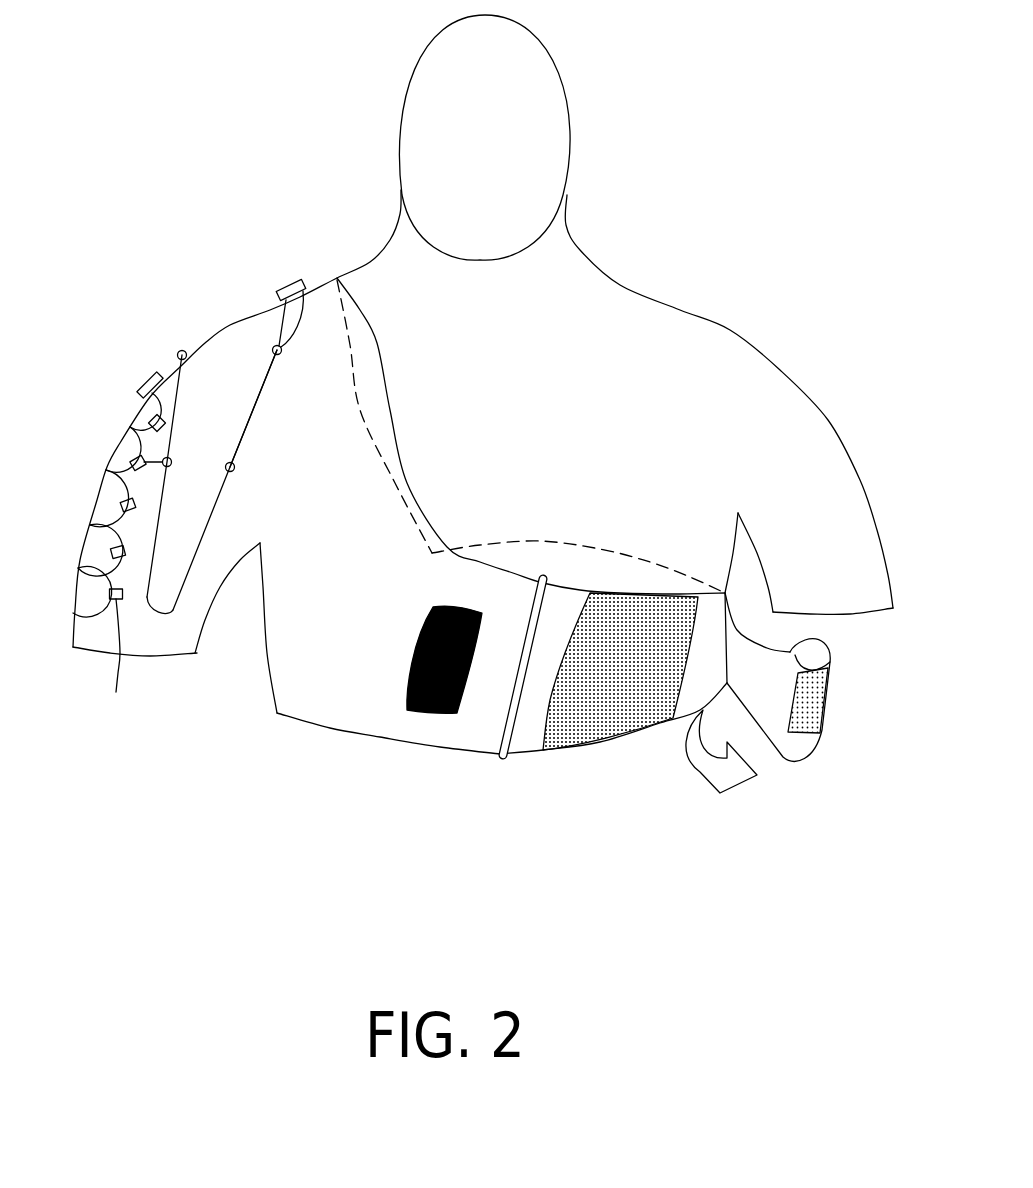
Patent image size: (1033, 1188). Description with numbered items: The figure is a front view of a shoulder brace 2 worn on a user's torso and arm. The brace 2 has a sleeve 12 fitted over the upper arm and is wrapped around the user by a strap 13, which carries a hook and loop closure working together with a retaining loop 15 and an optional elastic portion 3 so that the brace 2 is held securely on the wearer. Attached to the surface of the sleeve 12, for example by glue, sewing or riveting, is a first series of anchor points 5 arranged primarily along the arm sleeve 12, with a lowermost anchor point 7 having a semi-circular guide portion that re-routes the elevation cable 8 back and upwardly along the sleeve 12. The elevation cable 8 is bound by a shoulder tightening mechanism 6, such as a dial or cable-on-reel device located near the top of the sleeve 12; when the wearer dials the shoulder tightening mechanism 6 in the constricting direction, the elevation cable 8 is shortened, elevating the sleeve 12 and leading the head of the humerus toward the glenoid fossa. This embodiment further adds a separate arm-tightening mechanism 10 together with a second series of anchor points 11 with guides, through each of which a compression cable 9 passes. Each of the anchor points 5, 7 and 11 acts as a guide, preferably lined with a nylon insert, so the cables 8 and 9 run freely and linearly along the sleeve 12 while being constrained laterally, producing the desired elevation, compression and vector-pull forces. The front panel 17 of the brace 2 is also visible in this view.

The shoulder brace 2 is at (183, 180).
The elastic portion 3 is at (597, 737).
The anchor points 5 is at (305, 289).
The shoulder tightening mechanism 6 is at (287, 282).
The lowermost anchor point 7 is at (160, 612).
The elevation cable 8 is at (260, 387).
The compression cable 9 is at (93, 515).
The arm-tightening mechanism 10 is at (143, 386).
The second series of anchor points 11 is at (113, 656).
The sleeve 12 is at (220, 387).
The strap 13 is at (758, 662).
The retaining loop 15 is at (503, 758).
The front panel 17 is at (330, 702).